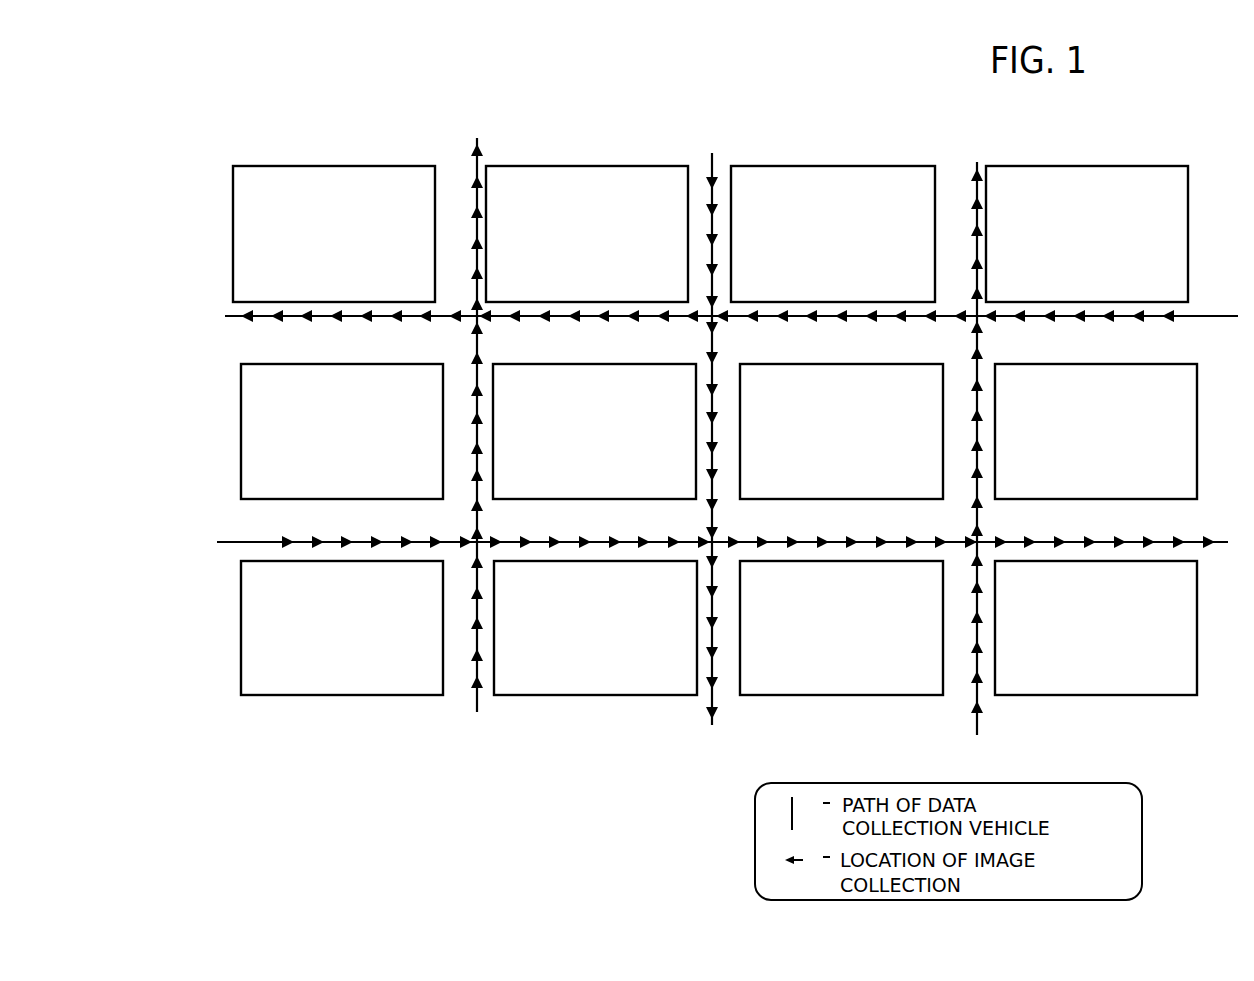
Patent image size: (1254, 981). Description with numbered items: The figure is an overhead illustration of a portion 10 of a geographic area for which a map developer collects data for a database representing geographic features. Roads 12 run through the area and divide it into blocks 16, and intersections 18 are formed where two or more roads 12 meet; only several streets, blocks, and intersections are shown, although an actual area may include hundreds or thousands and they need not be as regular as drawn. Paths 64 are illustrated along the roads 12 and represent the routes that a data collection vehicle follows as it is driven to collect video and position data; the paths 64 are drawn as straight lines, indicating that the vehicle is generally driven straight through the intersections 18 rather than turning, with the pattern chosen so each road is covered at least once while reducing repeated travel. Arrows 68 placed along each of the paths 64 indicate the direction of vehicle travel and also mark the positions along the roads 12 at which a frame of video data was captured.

The portion of a geographic area 10 is at (695, 445).
The roads 12 is at (243, 347).
The blocks 16 is at (552, 162).
The intersections 18 is at (702, 552).
The paths 64 is at (630, 313).
The arrows 68 is at (818, 305).